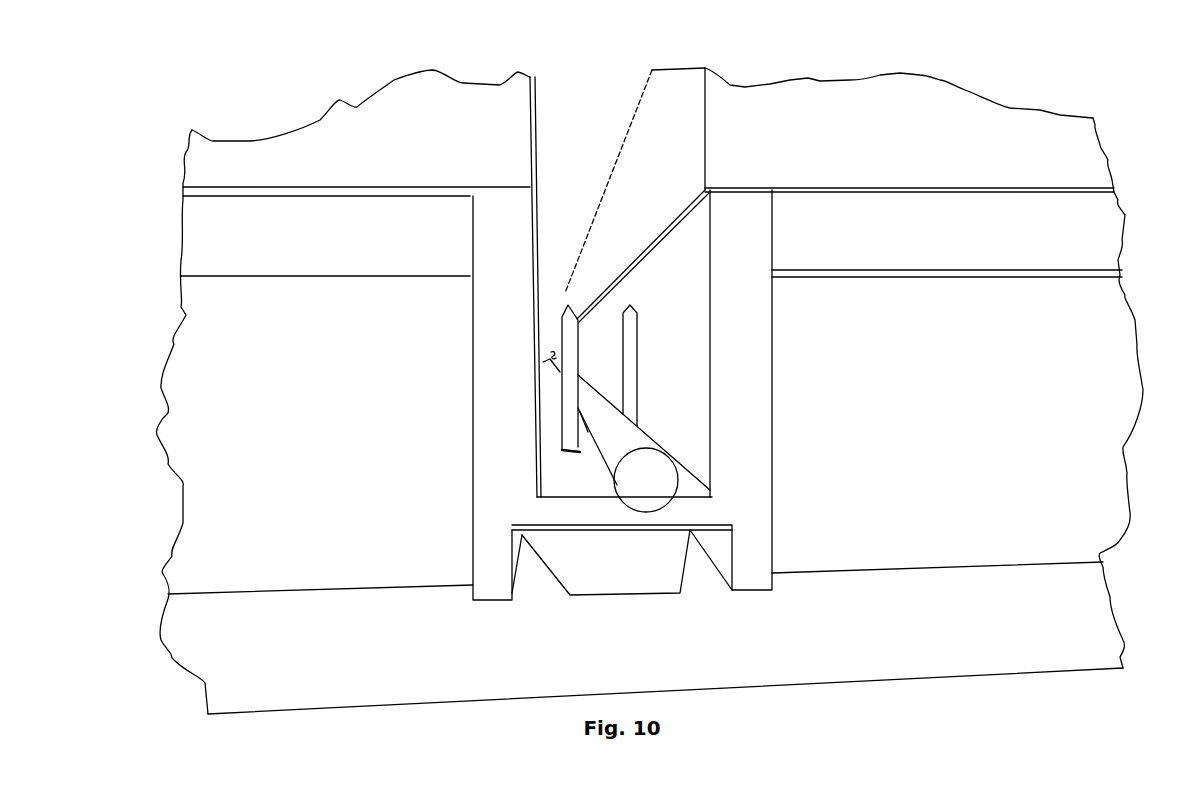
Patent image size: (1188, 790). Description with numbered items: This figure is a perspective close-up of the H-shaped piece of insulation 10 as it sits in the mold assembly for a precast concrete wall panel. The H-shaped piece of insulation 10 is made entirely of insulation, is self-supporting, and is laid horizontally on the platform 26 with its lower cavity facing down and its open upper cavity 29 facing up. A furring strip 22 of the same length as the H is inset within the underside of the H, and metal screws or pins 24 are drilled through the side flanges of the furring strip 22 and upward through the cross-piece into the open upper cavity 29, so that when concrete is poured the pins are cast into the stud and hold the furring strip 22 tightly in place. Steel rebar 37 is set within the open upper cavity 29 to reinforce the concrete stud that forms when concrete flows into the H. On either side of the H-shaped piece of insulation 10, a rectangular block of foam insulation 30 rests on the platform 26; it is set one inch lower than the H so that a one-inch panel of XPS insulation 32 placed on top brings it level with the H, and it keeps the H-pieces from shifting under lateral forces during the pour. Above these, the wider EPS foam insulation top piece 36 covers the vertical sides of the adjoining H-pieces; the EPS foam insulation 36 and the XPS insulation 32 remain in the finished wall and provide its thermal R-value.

The H-shaped piece of insulation 10 is at (770, 407).
The furring strip 22 is at (622, 562).
The metal screws or pins 24 is at (577, 320).
The platform 26 is at (665, 674).
The open upper cavity 29 is at (565, 72).
The block of foam insulation 30 is at (635, 492).
The XPS insulation panel 32 is at (651, 247).
The EPS foam insulation top piece 36 is at (648, 154).
The steel rod (rebar) 37 is at (646, 480).